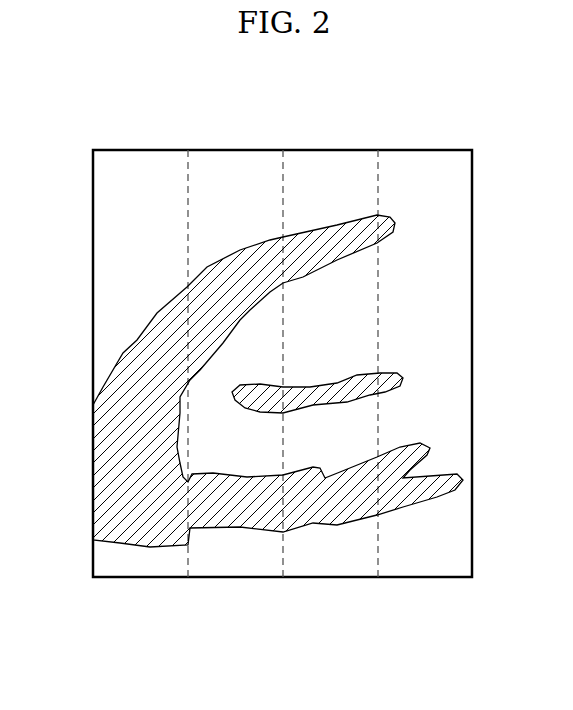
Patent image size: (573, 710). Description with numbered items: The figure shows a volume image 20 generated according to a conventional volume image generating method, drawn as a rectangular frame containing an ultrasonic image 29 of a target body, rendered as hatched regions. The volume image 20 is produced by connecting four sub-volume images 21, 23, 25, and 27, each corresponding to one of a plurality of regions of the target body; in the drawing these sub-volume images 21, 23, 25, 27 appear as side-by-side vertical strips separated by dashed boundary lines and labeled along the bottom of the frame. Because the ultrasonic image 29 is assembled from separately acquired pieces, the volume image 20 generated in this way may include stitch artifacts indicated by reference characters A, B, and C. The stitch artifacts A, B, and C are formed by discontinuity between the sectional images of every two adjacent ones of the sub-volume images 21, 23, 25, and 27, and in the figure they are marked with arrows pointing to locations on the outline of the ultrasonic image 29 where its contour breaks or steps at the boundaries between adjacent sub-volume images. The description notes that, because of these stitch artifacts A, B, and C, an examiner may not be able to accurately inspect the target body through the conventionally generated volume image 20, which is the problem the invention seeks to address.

The volume image 20 is at (296, 118).
The sub-volume image 21 is at (142, 567).
The sub-volume image 23 is at (234, 567).
The sub-volume image 25 is at (333, 567).
The sub-volume image 27 is at (432, 567).
The ultrasonic image 29 is at (105, 462).
The stitch artifact A is at (182, 284).
The stitch artifact B is at (196, 464).
The stitch artifact C is at (195, 540).